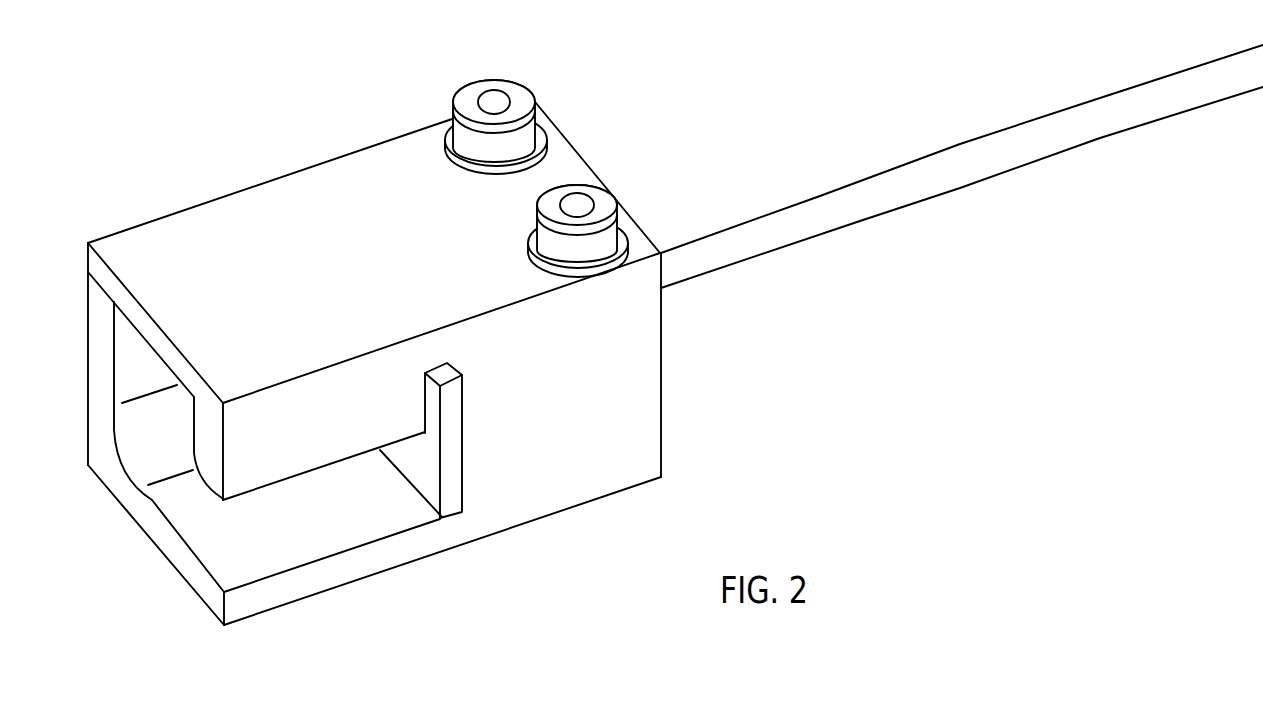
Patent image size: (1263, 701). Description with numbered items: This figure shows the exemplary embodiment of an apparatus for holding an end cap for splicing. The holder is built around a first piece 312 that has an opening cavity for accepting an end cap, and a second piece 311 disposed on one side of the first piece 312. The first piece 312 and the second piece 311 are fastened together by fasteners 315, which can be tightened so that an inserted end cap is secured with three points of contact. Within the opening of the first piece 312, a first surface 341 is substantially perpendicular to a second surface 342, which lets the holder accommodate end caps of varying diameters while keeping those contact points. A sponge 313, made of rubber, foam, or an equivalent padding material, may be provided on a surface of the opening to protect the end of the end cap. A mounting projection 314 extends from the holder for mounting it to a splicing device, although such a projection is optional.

The second piece 311 is at (317, 173).
The first piece 312 is at (655, 402).
The sponge 313 is at (453, 458).
The mounting projection 314 is at (850, 182).
The fasteners 315 is at (527, 92).
The first surface 341 is at (323, 543).
The second surface 342 is at (120, 368).